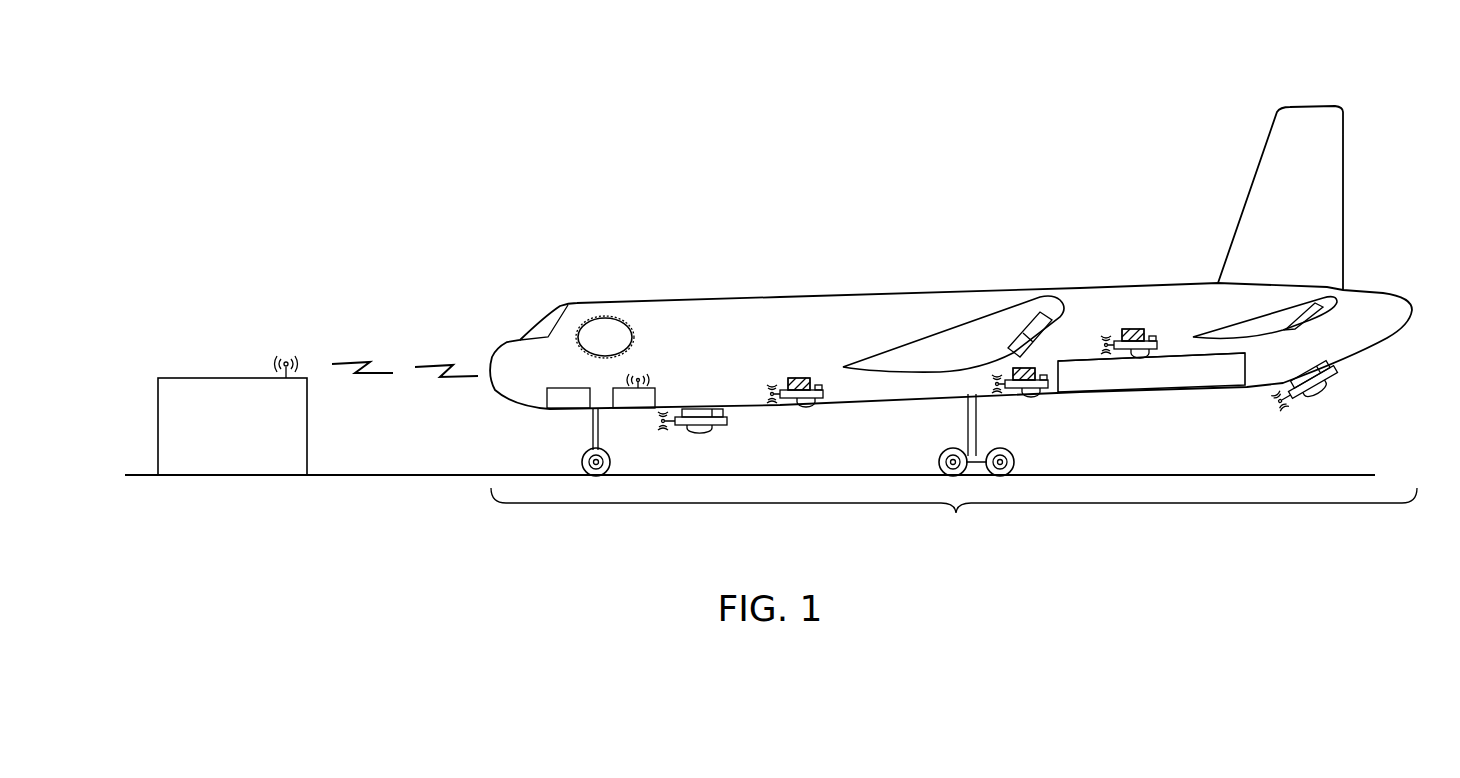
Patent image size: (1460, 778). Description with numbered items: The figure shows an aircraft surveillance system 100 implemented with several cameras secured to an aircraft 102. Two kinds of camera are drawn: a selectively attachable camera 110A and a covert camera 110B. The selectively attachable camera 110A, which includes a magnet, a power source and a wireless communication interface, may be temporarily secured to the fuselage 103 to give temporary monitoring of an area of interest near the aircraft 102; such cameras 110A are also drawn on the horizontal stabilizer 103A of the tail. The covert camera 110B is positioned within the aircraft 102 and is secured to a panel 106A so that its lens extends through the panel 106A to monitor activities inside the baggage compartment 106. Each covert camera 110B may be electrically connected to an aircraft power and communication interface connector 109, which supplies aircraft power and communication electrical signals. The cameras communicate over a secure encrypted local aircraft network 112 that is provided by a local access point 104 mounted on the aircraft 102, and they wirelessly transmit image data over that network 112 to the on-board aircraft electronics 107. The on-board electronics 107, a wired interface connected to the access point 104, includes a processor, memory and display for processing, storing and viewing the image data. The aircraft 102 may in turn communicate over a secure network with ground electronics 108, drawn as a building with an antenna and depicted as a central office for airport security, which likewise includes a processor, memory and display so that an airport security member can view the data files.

The aircraft surveillance system 100 is at (771, 511).
The aircraft 102 is at (753, 298).
The fuselage 103 is at (944, 308).
The horizontal stabilizer 103A is at (1380, 343).
The local access point 104 is at (643, 409).
The baggage compartment 106 is at (1228, 378).
The panel 106A is at (1082, 360).
The on-board aircraft electronics 107 is at (562, 409).
The ground electronics 108 is at (207, 378).
The aircraft power and communication interface connector 109 is at (795, 378).
The selectively attachable camera 110A is at (722, 426).
The covert camera 110B is at (817, 404).
The local aircraft network 112 is at (605, 318).